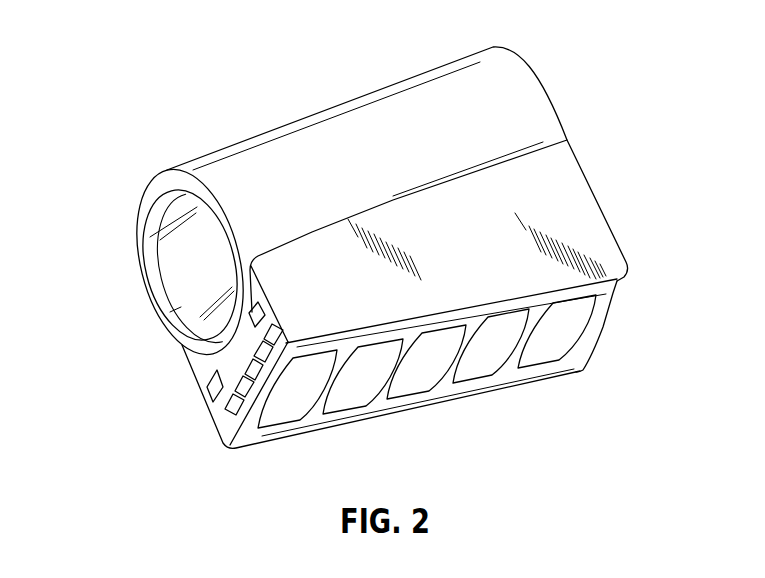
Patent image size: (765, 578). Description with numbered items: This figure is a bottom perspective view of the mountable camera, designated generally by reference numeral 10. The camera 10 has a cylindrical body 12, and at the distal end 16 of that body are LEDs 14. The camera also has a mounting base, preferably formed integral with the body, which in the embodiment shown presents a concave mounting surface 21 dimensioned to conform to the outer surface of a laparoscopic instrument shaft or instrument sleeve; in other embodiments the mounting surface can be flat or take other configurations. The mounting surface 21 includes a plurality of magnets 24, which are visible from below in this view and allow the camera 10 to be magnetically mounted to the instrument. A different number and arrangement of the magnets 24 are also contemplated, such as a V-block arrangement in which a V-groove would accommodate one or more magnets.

The camera 10 is at (198, 64).
The cylindrical body 12 is at (351, 100).
The LEDs 14 is at (222, 415).
The distal end 16 is at (141, 152).
The mounting surface 21 is at (584, 340).
The magnets 24 is at (417, 375).